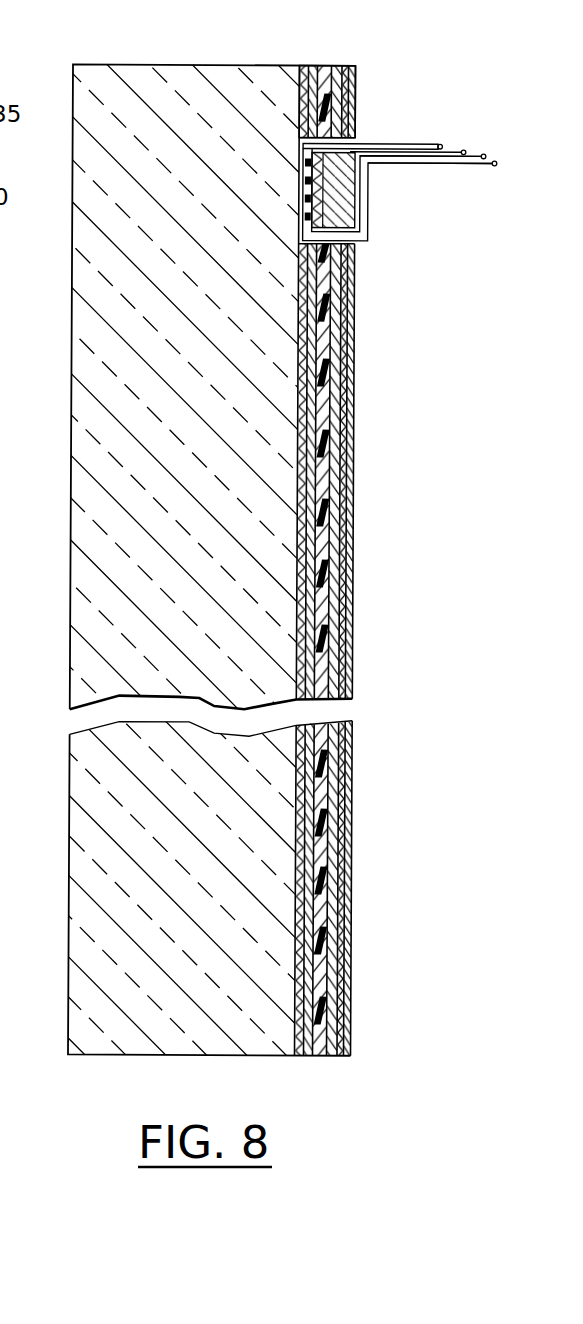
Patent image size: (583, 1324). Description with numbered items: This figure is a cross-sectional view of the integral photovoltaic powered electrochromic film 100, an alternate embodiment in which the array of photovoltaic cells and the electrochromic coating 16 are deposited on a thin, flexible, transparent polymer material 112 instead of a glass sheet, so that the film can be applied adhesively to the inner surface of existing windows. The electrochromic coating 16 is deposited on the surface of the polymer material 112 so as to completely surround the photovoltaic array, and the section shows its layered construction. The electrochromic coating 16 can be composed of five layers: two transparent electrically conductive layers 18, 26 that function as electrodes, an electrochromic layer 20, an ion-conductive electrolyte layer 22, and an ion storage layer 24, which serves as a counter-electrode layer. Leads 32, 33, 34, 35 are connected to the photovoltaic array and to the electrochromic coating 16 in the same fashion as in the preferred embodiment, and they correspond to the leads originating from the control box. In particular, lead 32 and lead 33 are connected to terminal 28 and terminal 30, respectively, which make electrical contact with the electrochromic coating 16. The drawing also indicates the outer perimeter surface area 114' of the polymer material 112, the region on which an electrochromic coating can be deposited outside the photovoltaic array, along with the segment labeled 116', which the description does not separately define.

The integral photovoltaic powered electrochromic film 100 is at (291, 553).
The polymer material 112 is at (69, 326).
The electrochromic coating 16 is at (364, 552).
The transparent electrically conductive layer 18 is at (357, 390).
The electrochromic layer 20 is at (348, 424).
The ion-conductive electrolyte layer 22 is at (340, 455).
The ion storage layer 24 is at (330, 490).
The transparent electrically conductive layer 26 is at (303, 543).
The terminal 28 is at (308, 262).
The terminal 30 is at (355, 247).
The lead 32 is at (384, 160).
The lead 33 is at (447, 164).
The lead 34 is at (362, 142).
The lead 35 is at (449, 148).
The outer perimeter surface area 114' is at (367, 575).
The upper panel segment 116' is at (367, 75).